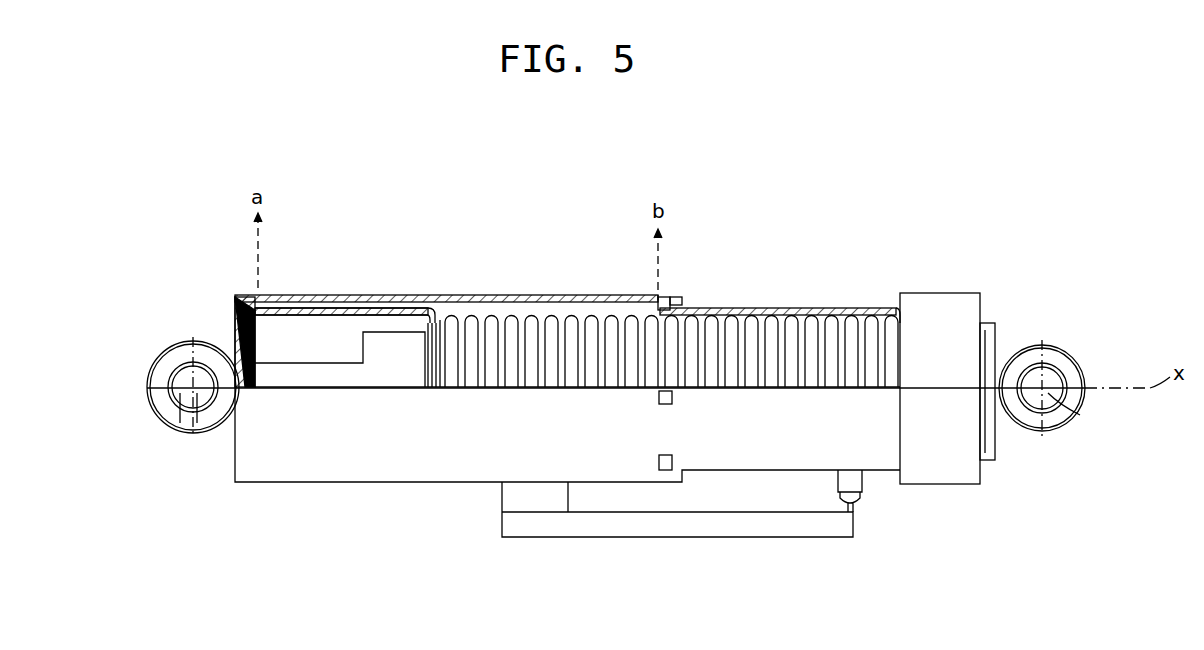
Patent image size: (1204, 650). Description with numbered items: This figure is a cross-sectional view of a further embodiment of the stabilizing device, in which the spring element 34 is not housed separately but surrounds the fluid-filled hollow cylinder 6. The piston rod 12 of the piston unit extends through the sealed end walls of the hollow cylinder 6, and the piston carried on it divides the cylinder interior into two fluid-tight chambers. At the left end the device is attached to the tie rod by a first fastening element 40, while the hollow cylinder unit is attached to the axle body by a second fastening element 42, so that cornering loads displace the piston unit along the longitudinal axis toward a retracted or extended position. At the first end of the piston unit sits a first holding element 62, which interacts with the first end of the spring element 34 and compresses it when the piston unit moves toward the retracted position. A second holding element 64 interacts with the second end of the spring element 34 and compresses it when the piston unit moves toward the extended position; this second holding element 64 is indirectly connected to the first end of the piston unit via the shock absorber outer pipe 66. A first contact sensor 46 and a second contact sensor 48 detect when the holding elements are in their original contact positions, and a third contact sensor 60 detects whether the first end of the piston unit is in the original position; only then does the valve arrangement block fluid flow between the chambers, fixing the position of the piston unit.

The hollow cylinder 6 is at (392, 375).
The piston rod 12 is at (285, 372).
The spring element 34 is at (493, 318).
The first fastening element 40 is at (178, 430).
The second fastening element 42 is at (1075, 418).
The first contact sensor 46 is at (250, 296).
The second contact sensor 48 is at (660, 288).
The third contact sensor 60 is at (857, 500).
The first holding element 62 is at (293, 313).
The second holding element 64 is at (752, 312).
The shock absorber outer pipe 66 is at (380, 297).